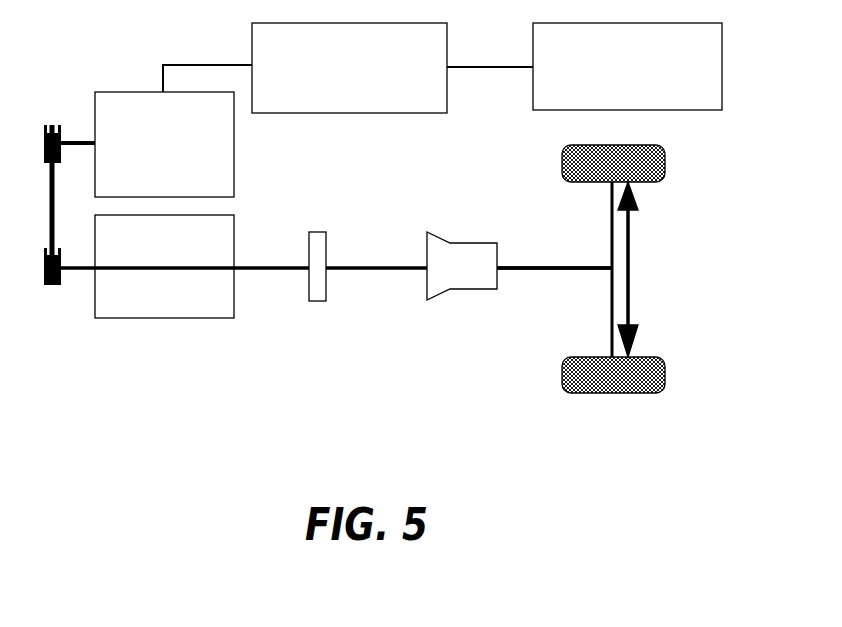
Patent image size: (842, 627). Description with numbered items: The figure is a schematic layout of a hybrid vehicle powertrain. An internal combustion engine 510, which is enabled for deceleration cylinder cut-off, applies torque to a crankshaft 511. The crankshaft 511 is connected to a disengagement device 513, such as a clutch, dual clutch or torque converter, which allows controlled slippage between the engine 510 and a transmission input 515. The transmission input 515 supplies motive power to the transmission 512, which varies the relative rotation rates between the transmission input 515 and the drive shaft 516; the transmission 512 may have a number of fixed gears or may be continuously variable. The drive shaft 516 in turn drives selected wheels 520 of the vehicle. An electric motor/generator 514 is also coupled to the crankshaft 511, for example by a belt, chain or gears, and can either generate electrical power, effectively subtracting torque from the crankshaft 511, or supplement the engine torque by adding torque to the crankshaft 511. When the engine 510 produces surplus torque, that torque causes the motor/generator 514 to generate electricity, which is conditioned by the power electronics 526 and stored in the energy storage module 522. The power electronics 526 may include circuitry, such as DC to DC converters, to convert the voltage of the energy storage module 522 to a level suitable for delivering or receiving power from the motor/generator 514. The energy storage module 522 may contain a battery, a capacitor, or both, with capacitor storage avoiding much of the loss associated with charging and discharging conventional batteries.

The engine 510 is at (92, 320).
The crankshaft 511 is at (70, 271).
The transmission 512 is at (455, 290).
The disengagement device 513 is at (315, 301).
The electric motor/generator 514 is at (95, 92).
The transmission input 515 is at (372, 269).
The drive shaft 516 is at (536, 270).
The wheels 520 is at (600, 393).
The energy storage module 522 is at (722, 80).
The power electronics 526 is at (347, 113).